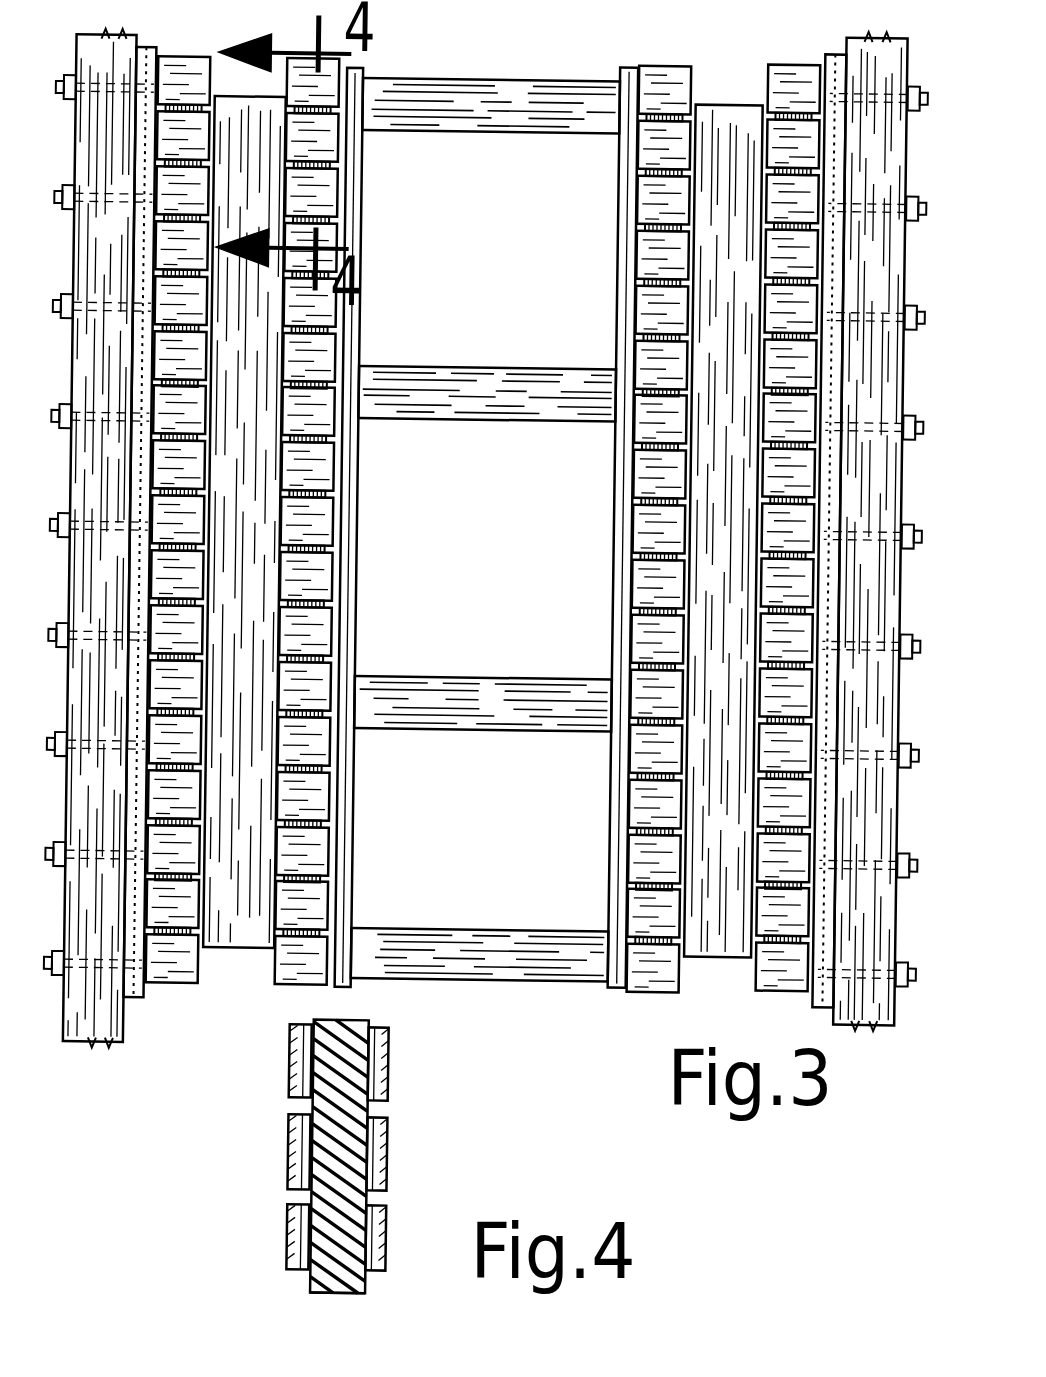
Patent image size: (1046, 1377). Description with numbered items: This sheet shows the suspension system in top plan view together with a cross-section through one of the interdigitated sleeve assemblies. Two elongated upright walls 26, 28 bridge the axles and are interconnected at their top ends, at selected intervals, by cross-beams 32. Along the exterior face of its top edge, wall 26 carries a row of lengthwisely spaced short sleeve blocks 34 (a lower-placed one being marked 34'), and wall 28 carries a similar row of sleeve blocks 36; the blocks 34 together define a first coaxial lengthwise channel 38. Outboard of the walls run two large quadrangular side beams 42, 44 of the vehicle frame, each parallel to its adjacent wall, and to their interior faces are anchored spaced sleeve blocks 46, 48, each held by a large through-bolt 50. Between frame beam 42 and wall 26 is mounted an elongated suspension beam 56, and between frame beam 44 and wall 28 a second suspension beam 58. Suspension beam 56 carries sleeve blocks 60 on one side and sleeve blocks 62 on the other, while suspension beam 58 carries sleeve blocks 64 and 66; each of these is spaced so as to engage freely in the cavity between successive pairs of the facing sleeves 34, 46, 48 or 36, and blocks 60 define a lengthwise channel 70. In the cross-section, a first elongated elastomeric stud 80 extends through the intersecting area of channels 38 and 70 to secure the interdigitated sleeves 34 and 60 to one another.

In FIG. 3, the upright wall 26 is at (358, 440).
In FIG. 3, the upright wall 28 is at (617, 852).
In FIG. 3, the cross-beam 32 is at (485, 688).
In FIG. 3, the sleeve block 34 is at (485, 528).
In FIG. 4, the sleeve block 34 is at (435, 1136).
In FIG. 3, the plank 34' is at (325, 549).
In FIG. 3, the sleeve block 36 is at (650, 63).
In FIG. 4, the lengthwise channel 38 is at (377, 1028).
In FIG. 3, the bottom side beam 42 is at (87, 1020).
In FIG. 3, the side beam 44 is at (867, 67).
In FIG. 3, the sleeve block 46 is at (185, 85).
In FIG. 3, the sleeve block 48 is at (717, 135).
In FIG. 3, the through-bolt 50 is at (915, 200).
In FIG. 3, the suspension beam 56 is at (243, 930).
In FIG. 3, the suspension beam 58 is at (733, 150).
In FIG. 3, the sleeve block 60 is at (357, 440).
In FIG. 4, the sleeve block 60 is at (387, 1135).
In FIG. 3, the sleeve block 62 is at (193, 140).
In FIG. 3, the sleeve block 64 is at (790, 147).
In FIG. 3, the sleeve block 66 is at (620, 150).
In FIG. 4, the lengthwise channel 70 is at (387, 1183).
In FIG. 4, the elastomeric stud 80 is at (373, 1287).